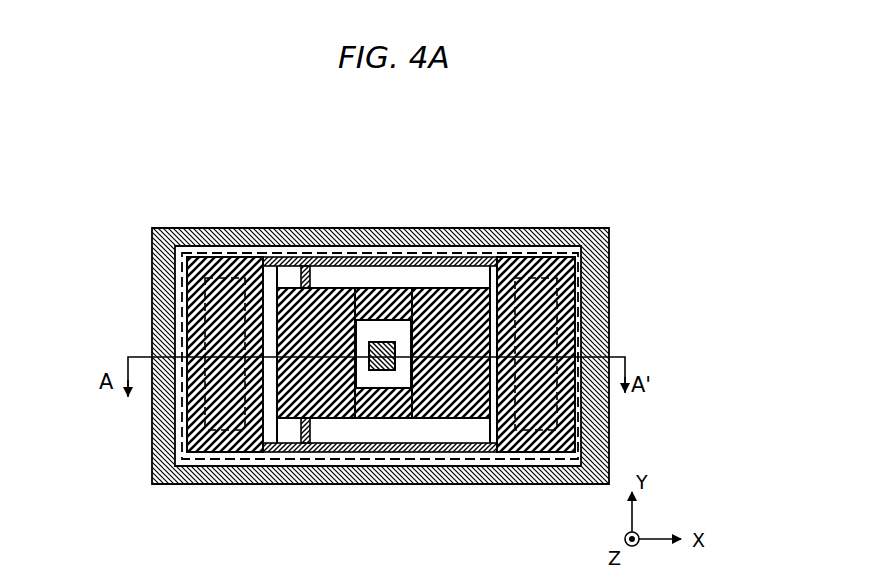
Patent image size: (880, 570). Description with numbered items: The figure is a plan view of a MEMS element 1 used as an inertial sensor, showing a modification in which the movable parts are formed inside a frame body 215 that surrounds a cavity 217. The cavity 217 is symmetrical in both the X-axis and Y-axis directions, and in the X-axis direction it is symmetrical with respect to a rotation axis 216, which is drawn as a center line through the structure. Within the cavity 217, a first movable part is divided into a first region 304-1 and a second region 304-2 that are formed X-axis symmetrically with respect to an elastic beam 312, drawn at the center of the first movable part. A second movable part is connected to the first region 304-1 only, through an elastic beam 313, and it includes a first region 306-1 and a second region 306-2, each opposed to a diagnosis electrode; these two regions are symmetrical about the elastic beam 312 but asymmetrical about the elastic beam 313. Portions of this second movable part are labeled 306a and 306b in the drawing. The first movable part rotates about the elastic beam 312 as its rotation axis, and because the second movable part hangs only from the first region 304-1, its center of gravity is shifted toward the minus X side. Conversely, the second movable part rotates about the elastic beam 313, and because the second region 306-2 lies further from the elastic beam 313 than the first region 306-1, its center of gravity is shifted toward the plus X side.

The MEMS element 1 is at (116, 163).
The frame body 215 is at (588, 437).
The rotation axis 216 is at (383, 198).
The cavity 217 is at (178, 458).
The first region 304-1 is at (276, 205).
The second region 304-2 is at (383, 170).
The electrode connecting portion 306a is at (578, 262).
The electrode pad portion 306b is at (207, 260).
The first region 306-1 is at (182, 205).
The second region 306-2 is at (577, 205).
The elastic beam 312 is at (396, 288).
The elastic beam 313 is at (302, 270).